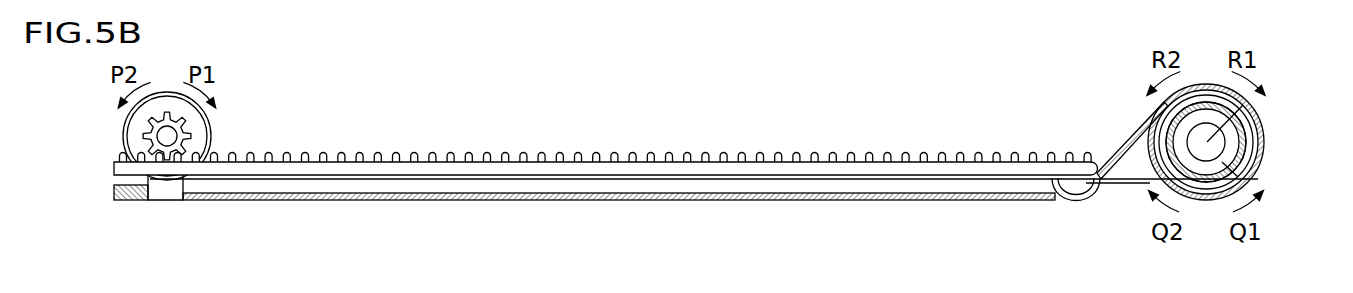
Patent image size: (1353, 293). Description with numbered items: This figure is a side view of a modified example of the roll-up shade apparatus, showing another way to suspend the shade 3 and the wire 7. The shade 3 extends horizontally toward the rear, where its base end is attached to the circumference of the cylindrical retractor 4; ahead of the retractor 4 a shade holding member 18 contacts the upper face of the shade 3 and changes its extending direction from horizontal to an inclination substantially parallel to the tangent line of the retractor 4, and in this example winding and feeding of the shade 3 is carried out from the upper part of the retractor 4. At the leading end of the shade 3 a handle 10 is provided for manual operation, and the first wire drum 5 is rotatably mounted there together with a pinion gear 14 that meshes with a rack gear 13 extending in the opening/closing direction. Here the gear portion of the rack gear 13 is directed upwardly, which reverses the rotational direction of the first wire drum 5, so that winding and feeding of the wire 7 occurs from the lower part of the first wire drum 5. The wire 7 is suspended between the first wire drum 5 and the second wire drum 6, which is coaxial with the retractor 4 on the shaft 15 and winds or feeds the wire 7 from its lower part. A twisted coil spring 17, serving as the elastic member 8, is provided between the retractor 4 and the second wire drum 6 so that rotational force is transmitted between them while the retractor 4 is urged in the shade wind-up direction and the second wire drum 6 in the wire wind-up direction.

The shade 3 is at (712, 200).
The retractor 4 is at (1252, 167).
The first wire drum 5 is at (128, 128).
The second wire drum 6 is at (1258, 179).
The wire 7 is at (1119, 185).
The elastic member 8 is at (1258, 103).
The handle 10 is at (132, 200).
The rack gear 13 is at (399, 153).
The pinion gear 14 is at (206, 128).
The shaft 15 is at (1260, 139).
The twisted coil spring 17 is at (1248, 142).
The shade holding member 18 is at (1050, 204).